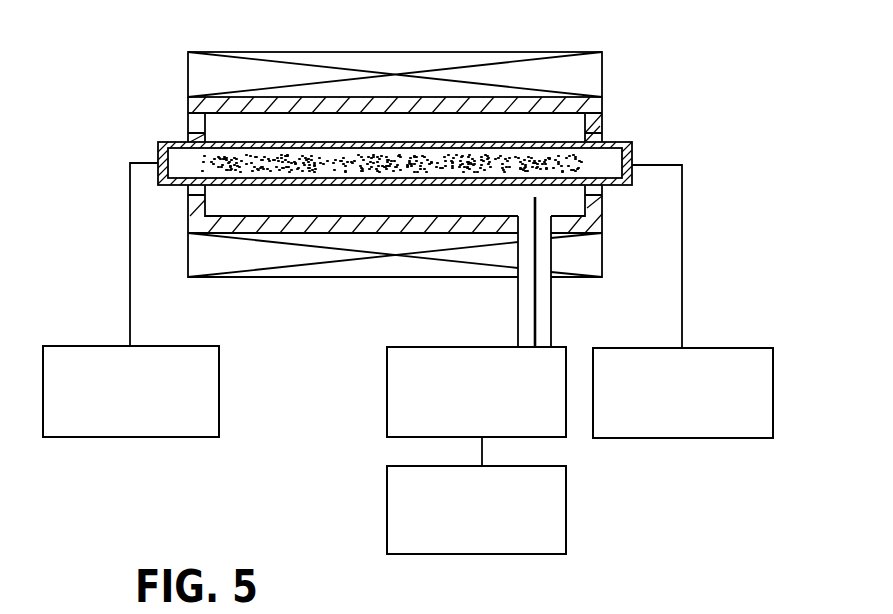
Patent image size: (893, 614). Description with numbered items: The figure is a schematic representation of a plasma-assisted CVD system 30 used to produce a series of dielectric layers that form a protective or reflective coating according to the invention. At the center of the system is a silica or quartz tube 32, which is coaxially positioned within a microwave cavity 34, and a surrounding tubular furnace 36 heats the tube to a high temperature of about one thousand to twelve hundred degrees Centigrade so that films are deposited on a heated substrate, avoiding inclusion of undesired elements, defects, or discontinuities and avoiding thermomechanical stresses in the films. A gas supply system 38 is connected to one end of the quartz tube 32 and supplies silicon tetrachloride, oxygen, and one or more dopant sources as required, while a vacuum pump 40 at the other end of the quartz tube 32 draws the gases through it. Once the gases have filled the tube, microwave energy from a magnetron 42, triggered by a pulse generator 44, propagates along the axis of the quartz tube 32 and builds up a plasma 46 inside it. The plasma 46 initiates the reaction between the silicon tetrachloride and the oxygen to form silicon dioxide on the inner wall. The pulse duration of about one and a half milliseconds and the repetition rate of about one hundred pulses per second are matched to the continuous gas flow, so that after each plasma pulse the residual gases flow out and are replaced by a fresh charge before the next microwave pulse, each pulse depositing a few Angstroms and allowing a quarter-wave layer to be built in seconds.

The CVD system 30 is at (712, 72).
The quartz tube 32 is at (183, 142).
The microwave cavity 34 is at (437, 203).
The tubular furnace 36 is at (221, 52).
The gas supply system 38 is at (168, 346).
The vacuum pump 40 is at (720, 348).
The magnetron 42 is at (387, 400).
The pulse generator 44 is at (387, 503).
The plasma 46 is at (553, 160).